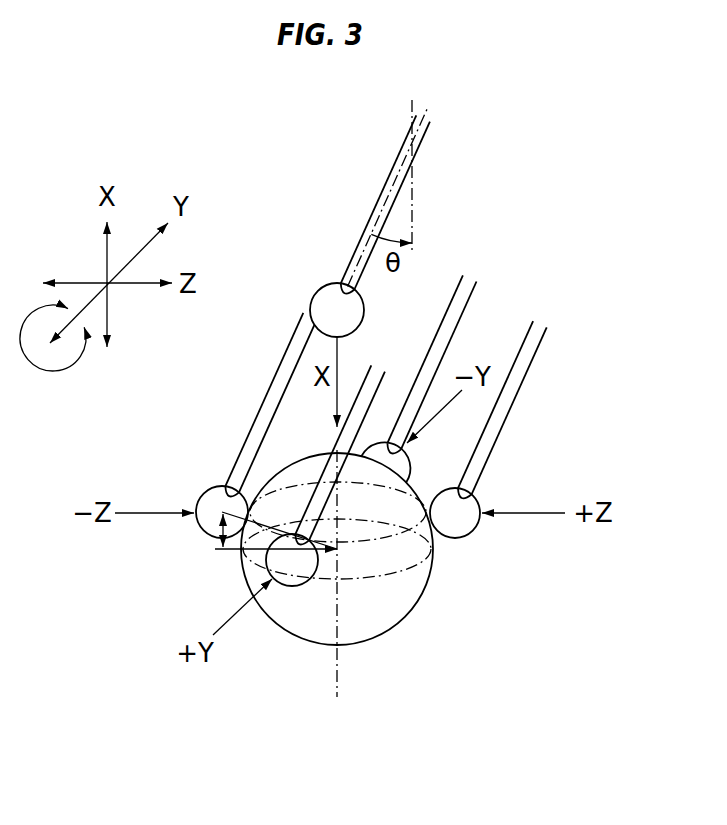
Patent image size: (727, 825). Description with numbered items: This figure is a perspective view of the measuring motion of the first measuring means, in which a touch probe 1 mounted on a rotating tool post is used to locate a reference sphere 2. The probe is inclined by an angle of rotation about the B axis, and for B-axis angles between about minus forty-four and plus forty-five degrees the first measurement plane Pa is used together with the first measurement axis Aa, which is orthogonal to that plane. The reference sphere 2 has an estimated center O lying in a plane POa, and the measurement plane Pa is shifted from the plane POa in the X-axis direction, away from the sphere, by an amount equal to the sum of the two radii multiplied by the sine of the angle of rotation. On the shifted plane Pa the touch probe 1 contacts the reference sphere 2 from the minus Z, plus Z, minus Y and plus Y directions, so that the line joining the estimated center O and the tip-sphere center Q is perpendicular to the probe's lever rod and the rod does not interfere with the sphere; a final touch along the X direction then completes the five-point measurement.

The touch probe 1 is at (366, 224).
The reference sphere 2 is at (300, 638).
The first measurement plane Pa is at (400, 528).
The plane including the estimated center of the reference sphere POa is at (410, 566).
The first measurement axis Aa is at (357, 576).
The estimated center of the reference sphere O is at (340, 552).
The center of the tip sphere Q is at (222, 513).
The B-axis angle of rotation B is at (53, 356).